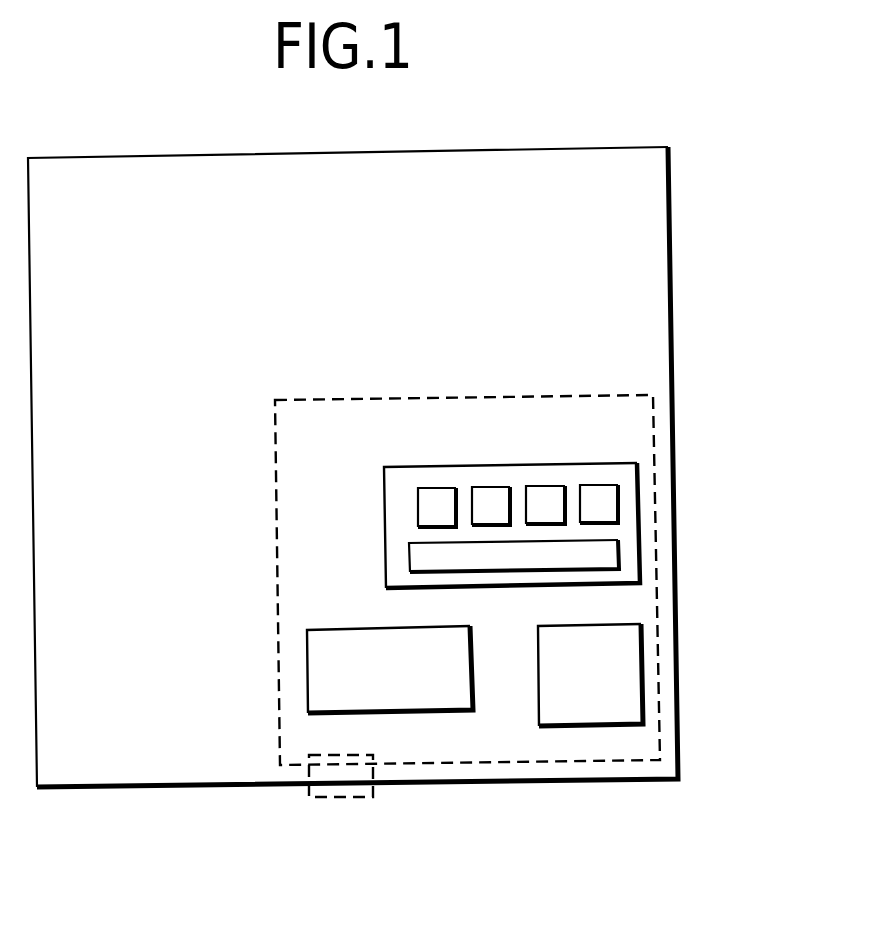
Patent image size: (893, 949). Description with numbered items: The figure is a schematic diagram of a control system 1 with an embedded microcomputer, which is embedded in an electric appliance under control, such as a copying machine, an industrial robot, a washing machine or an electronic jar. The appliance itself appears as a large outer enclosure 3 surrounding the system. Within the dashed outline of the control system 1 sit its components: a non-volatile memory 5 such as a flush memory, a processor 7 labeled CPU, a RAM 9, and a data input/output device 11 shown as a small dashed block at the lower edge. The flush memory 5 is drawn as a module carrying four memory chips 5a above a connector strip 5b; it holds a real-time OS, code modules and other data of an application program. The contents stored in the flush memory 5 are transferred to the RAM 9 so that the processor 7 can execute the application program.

The control system 1 is at (653, 418).
The housing 3 is at (608, 207).
The non-volatile memory 5 is at (559, 493).
The memory chip 5a is at (435, 480).
The connector strip 5b is at (550, 465).
The processor 7 is at (643, 670).
The RAM 9 is at (474, 656).
The data input/output device 11 is at (346, 800).